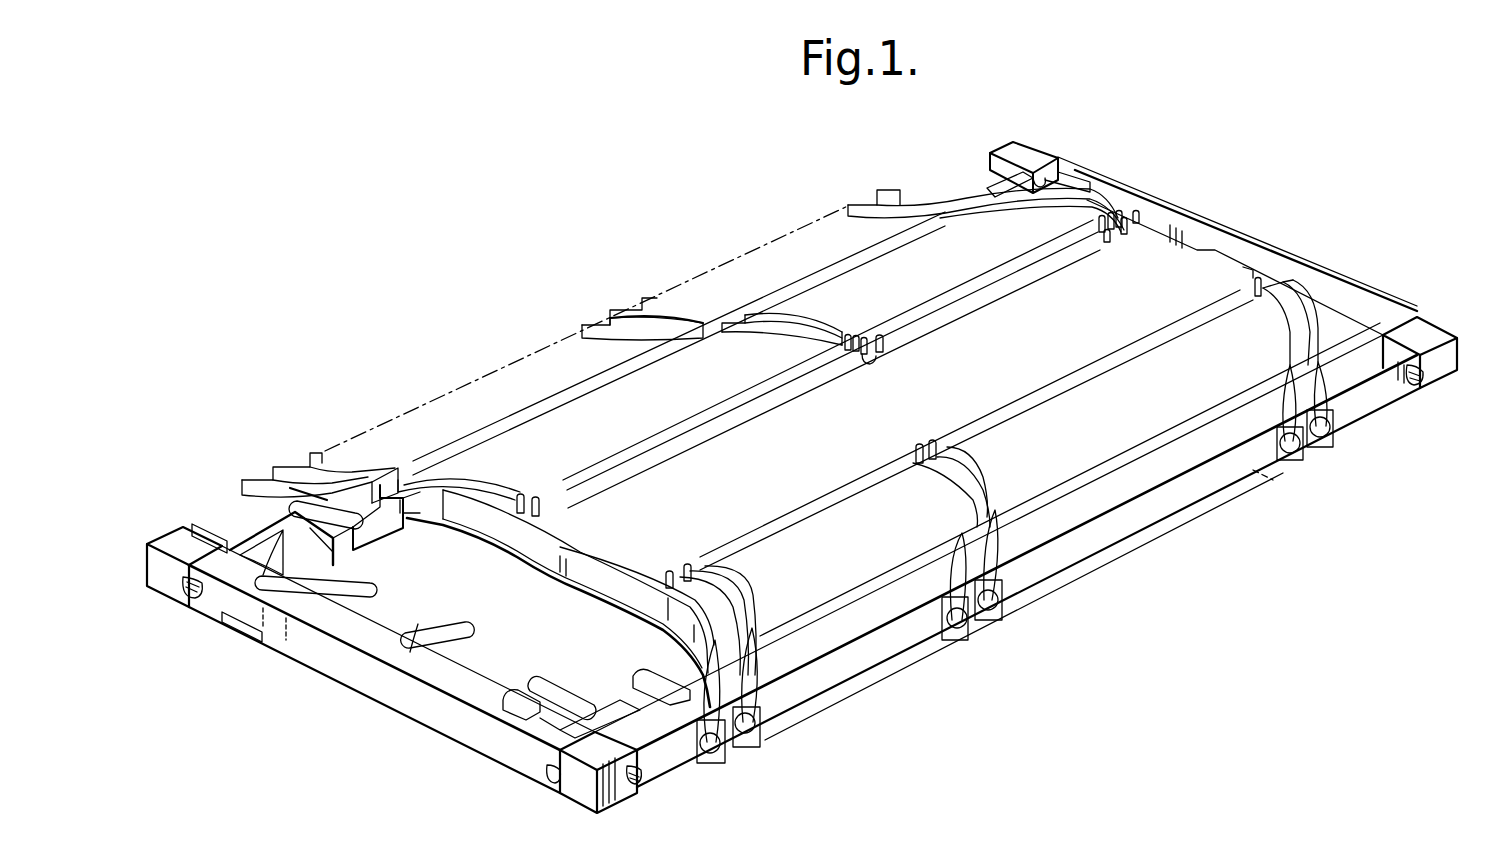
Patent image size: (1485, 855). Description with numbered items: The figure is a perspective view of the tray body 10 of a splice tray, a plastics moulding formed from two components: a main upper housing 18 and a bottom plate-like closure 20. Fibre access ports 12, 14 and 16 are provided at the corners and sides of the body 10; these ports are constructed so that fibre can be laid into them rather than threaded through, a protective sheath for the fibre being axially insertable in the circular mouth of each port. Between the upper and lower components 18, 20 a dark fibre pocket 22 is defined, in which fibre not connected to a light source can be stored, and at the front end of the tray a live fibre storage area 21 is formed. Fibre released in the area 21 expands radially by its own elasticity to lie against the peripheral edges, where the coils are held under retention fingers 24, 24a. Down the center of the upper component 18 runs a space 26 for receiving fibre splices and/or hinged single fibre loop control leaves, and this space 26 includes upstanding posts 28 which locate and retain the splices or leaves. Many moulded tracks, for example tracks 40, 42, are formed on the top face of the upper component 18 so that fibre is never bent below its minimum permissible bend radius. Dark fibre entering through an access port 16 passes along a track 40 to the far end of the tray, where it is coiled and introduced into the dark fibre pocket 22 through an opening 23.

The tray body 10 is at (634, 272).
The fibre access port 12 is at (190, 603).
The fibre access port 14 is at (640, 783).
The fibre access port 16 is at (745, 735).
The main upper housing 18 is at (312, 652).
The bottom plate-like closure 20 is at (372, 692).
The live fibre storage area 21 is at (444, 590).
The dark fibre pocket 22 is at (597, 552).
The opening 23 is at (1195, 240).
The retention finger 24 is at (373, 588).
The retention finger 24a is at (526, 700).
The space 26 is at (804, 456).
The upstanding post 28 is at (875, 365).
The track 40 is at (374, 476).
The track 42 is at (490, 490).